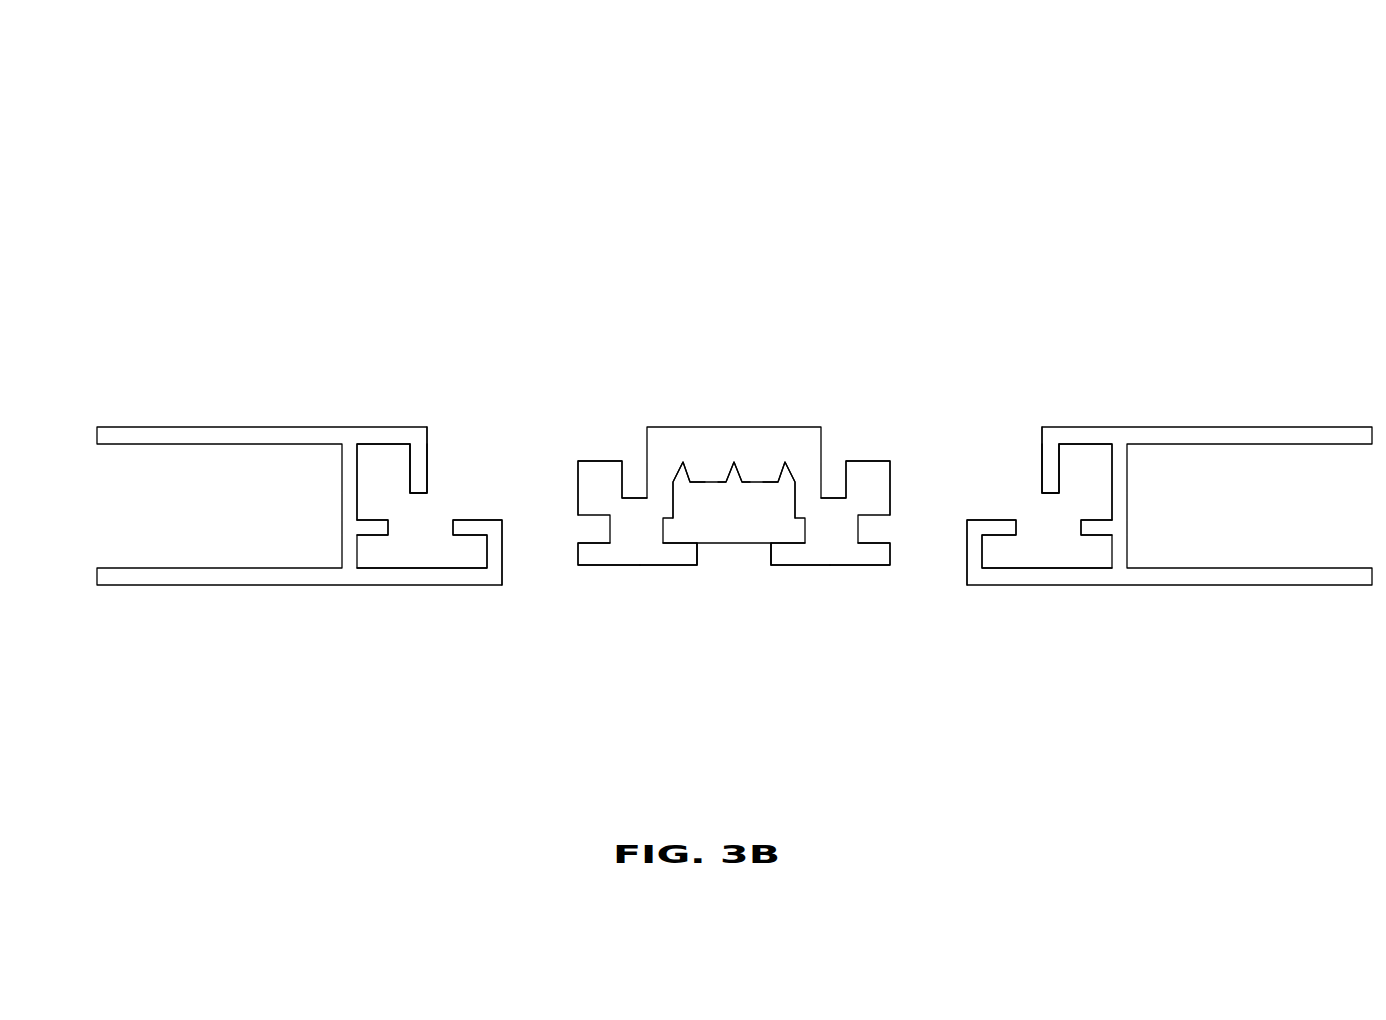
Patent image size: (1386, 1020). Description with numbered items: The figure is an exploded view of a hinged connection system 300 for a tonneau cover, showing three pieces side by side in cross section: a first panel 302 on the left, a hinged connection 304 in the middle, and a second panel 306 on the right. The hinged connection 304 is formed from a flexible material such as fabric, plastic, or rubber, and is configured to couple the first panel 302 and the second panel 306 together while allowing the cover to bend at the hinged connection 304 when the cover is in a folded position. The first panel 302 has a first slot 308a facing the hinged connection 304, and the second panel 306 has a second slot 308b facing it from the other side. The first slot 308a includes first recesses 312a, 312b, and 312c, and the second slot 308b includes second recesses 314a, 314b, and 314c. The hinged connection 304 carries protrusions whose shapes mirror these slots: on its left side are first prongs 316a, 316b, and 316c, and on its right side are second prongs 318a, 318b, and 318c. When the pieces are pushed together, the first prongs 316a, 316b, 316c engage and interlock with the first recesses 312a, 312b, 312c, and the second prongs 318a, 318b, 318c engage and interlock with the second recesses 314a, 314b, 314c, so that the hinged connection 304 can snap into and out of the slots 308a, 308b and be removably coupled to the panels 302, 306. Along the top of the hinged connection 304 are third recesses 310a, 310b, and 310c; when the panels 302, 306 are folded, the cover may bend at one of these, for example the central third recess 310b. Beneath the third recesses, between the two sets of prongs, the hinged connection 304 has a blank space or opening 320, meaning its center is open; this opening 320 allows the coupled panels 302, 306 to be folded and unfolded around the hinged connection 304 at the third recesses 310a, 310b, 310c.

The hinged connection system 300 is at (314, 116).
The first panel 302 is at (262, 428).
The hinged connection 304 is at (718, 428).
The second panel 306 is at (1207, 428).
The first slot 308a is at (378, 470).
The second slot 308b is at (1088, 462).
The third recess 310a is at (678, 472).
The third recess 310b is at (736, 472).
The third recess 310c is at (787, 470).
The first recess 312a is at (402, 475).
The first recess 312b is at (373, 553).
The first recess 312c is at (463, 553).
The second recess 314a is at (1070, 480).
The second recess 314b is at (1013, 553).
The second recess 314c is at (1085, 553).
The first prong 316a is at (598, 482).
The first prong 316b is at (600, 553).
The first prong 316c is at (672, 553).
The second prong 318a is at (870, 490).
The second prong 318b is at (798, 553).
The second prong 318c is at (870, 553).
The opening 320 is at (738, 553).